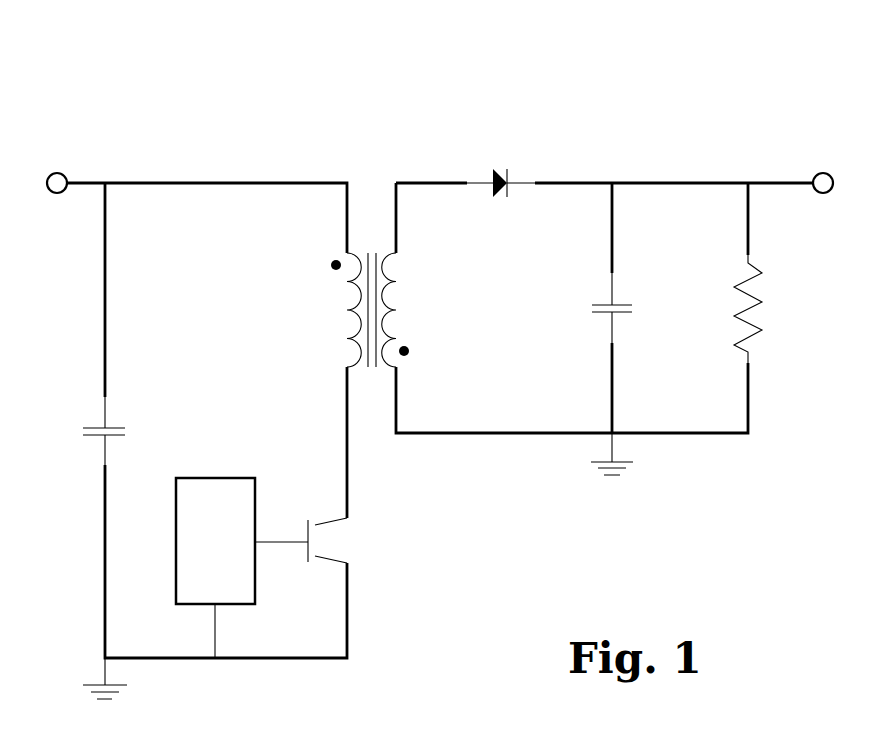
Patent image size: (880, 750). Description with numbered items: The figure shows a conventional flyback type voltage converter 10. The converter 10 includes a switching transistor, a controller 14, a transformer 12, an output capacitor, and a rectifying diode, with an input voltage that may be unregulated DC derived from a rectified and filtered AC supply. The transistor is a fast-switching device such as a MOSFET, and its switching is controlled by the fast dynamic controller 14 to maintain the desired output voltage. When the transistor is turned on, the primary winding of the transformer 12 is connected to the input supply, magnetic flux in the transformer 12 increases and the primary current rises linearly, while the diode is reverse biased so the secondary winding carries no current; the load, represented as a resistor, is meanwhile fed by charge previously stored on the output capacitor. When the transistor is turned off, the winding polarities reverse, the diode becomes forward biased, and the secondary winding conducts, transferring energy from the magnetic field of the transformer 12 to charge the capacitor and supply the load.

The converter 10 is at (723, 108).
The transformer 12 is at (368, 237).
The controller 14 is at (235, 478).